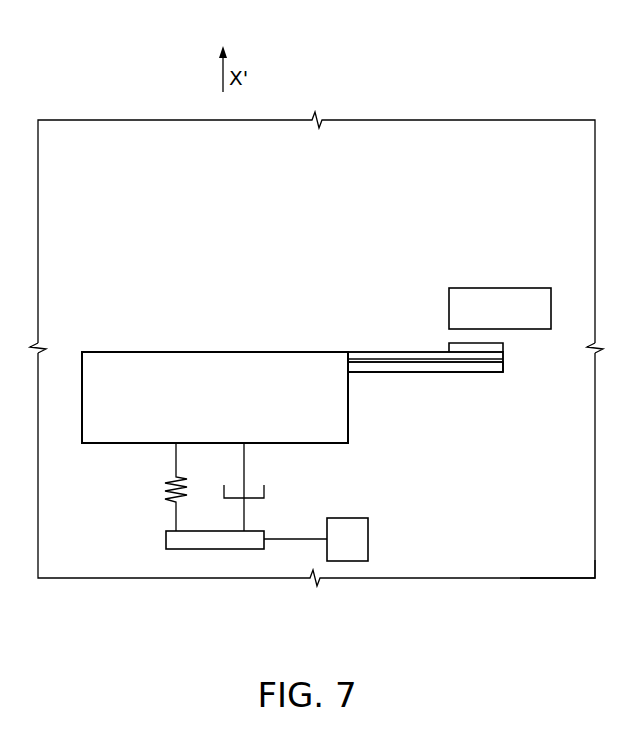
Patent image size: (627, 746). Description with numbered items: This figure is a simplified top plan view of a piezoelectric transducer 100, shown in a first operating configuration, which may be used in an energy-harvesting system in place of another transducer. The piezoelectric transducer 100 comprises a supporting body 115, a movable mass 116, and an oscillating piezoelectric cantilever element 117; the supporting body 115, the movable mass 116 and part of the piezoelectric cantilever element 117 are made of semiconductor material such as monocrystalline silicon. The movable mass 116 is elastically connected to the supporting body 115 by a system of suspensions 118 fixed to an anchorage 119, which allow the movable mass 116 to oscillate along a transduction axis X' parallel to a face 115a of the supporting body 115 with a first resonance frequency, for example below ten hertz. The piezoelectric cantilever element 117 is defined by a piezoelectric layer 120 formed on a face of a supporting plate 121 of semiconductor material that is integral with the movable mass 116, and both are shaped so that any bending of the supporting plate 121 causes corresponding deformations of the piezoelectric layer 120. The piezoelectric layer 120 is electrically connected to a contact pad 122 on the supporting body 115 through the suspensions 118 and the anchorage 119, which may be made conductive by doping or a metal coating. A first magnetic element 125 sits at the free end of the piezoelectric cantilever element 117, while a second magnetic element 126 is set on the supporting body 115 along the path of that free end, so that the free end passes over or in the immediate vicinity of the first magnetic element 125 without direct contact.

The piezoelectric transducer 100 is at (446, 102).
The supporting body 115 is at (80, 128).
The face of the supporting body 115a is at (498, 560).
The movable mass 116 is at (170, 357).
The piezoelectric cantilever element 117 is at (456, 382).
The suspensions 118 is at (142, 493).
The anchorage 119 is at (166, 535).
The piezoelectric layer 120 is at (389, 350).
The supporting plate 121 is at (392, 374).
The contact pad 122 is at (365, 545).
The first magnetic element 125 is at (496, 345).
The second magnetic element 126 is at (492, 287).